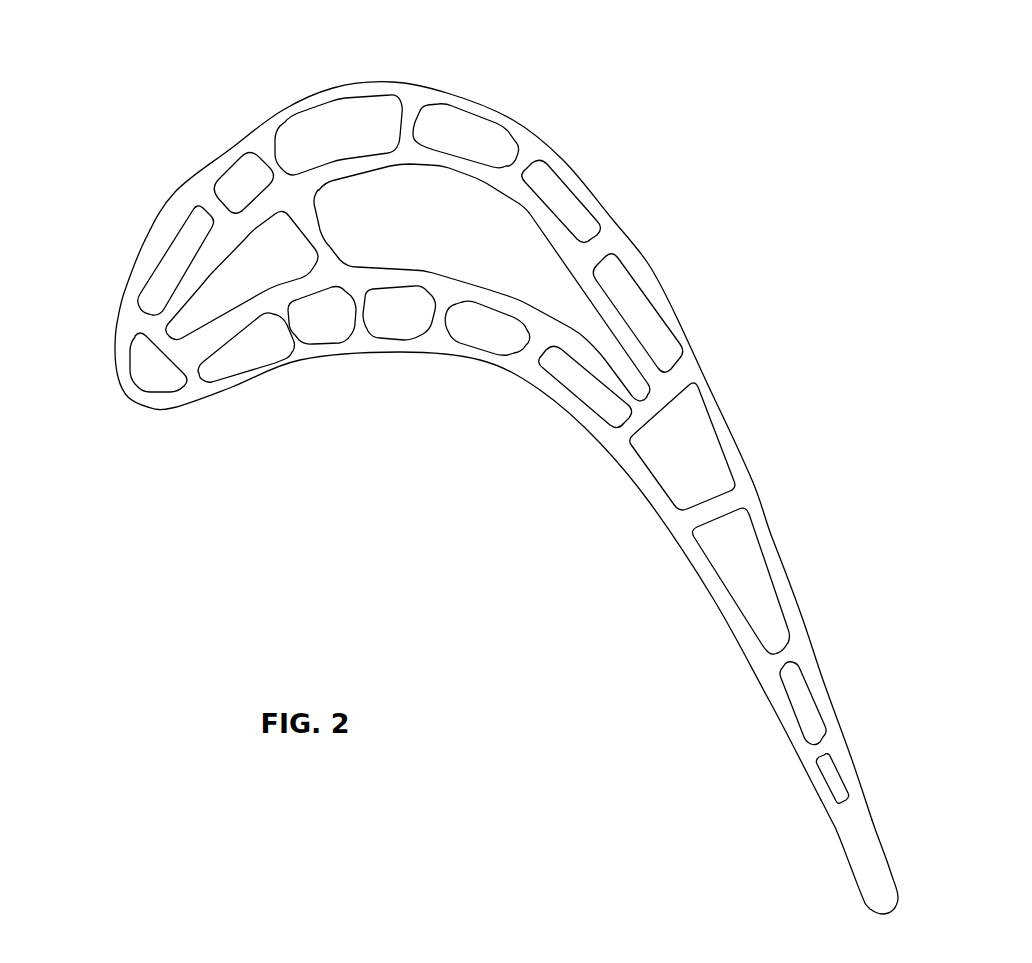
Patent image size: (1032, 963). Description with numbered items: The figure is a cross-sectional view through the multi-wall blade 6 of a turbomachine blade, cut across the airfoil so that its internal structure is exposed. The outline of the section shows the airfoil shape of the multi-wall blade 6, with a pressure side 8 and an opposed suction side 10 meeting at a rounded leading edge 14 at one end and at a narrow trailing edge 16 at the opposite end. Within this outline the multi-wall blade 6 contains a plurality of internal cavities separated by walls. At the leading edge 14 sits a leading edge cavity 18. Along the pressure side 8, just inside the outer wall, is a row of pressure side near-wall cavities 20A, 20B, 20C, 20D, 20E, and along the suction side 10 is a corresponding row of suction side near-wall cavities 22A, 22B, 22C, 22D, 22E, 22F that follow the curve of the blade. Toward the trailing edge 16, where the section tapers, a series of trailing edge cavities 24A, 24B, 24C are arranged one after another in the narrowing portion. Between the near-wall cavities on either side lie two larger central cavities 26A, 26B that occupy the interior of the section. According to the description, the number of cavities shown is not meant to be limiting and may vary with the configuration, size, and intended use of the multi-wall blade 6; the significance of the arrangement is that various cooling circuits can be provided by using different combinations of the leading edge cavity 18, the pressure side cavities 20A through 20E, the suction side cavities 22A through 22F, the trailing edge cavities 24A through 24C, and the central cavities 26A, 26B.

The multi-wall blade 6 is at (766, 176).
The pressure side 8 is at (340, 463).
The suction side 10 is at (581, 79).
The leading edge 14 is at (115, 441).
The trailing edge 16 is at (918, 859).
The leading edge cavity 18 is at (132, 366).
The pressure side cavity 20A is at (243, 372).
The pressure side cavity 20B is at (337, 345).
The pressure side cavity 20C is at (410, 340).
The pressure side cavity 20D is at (487, 353).
The pressure side cavity 20E is at (573, 403).
The suction side cavity 22A is at (150, 270).
The suction side cavity 22B is at (224, 167).
The suction side cavity 22C is at (320, 108).
The suction side cavity 22D is at (488, 123).
The suction side cavity 22E is at (577, 190).
The suction side cavity 22F is at (653, 300).
The trailing edge cavity 24A is at (718, 432).
The trailing edge cavity 24B is at (770, 567).
The trailing edge cavity 24C is at (810, 690).
The central cavity 26A is at (214, 293).
The central cavity 26B is at (456, 247).